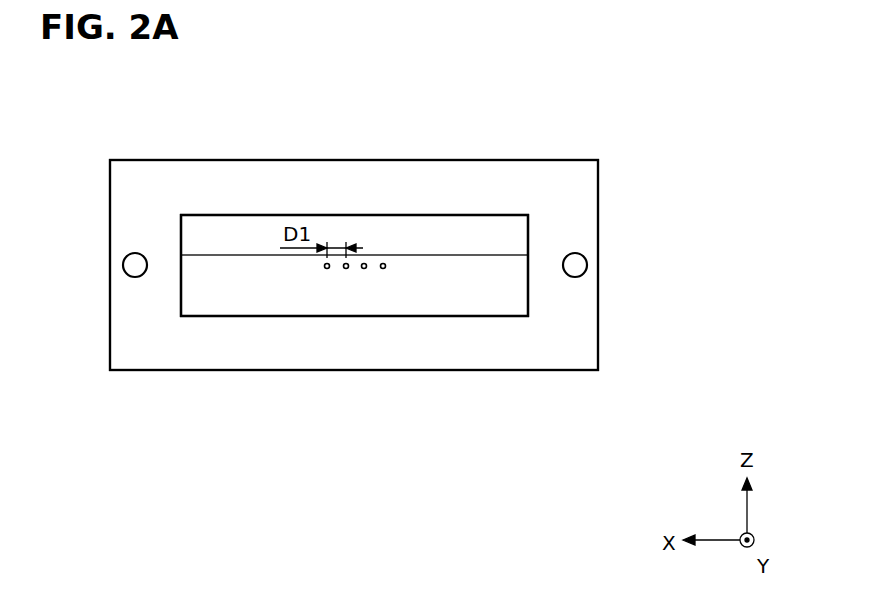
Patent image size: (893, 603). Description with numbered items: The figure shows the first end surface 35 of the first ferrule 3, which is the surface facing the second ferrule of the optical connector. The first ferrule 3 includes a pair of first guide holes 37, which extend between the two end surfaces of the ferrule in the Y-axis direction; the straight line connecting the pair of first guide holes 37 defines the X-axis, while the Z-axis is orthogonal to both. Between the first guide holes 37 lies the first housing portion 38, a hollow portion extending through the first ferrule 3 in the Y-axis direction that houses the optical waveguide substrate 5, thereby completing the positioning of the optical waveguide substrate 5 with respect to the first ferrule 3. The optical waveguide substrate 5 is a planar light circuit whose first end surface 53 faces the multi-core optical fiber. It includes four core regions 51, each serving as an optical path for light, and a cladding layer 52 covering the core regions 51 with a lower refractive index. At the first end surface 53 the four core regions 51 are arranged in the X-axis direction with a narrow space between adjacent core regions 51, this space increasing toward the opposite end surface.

The first ferrule 3 is at (556, 159).
The first end surface 35 is at (598, 192).
The first guide holes 37 is at (122, 265).
The first housing portion 38 is at (497, 316).
The optical waveguide substrate 5 is at (466, 243).
The core regions 51 is at (327, 270).
The cladding layer 52 is at (215, 300).
The first end surface 53 is at (391, 232).